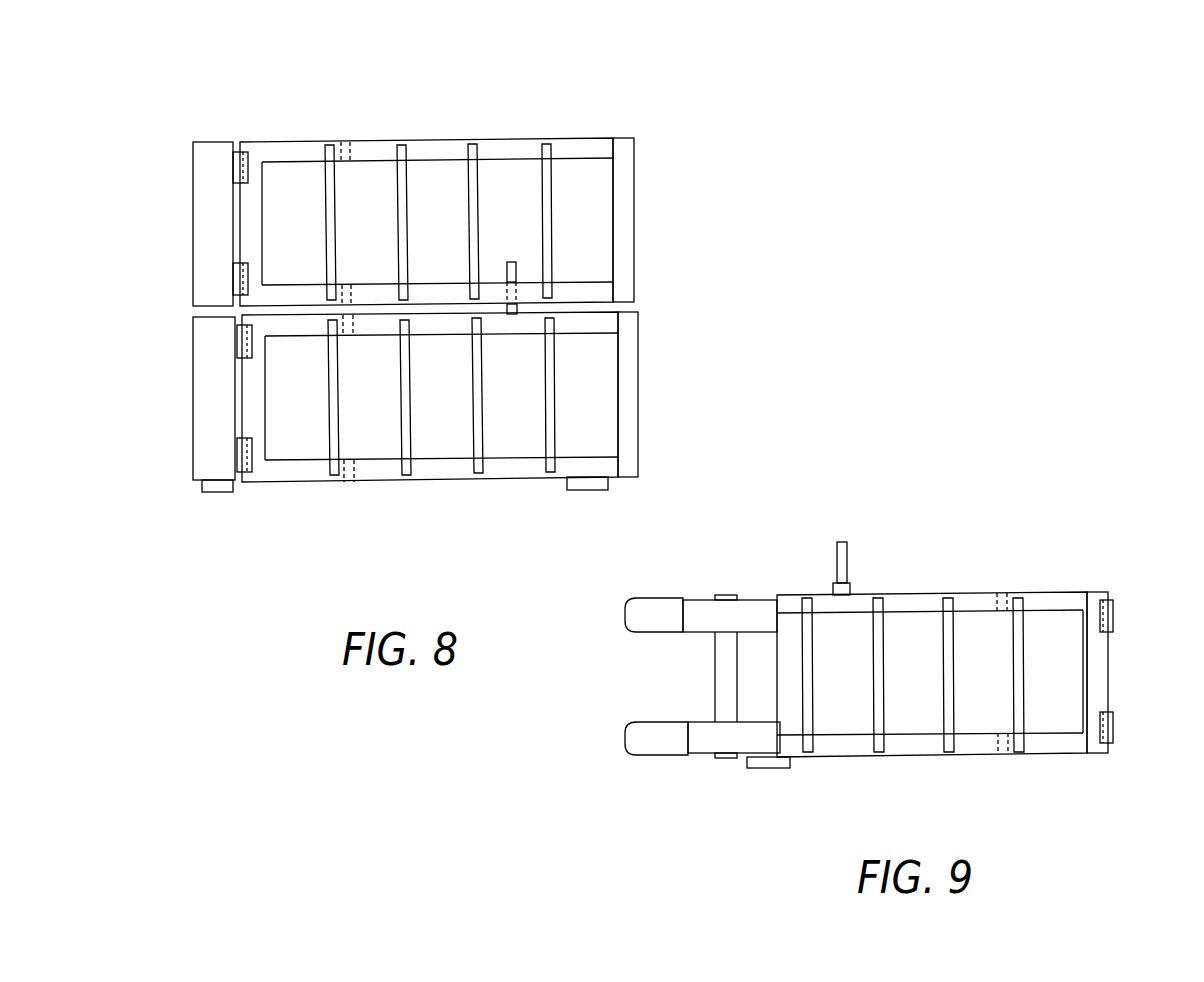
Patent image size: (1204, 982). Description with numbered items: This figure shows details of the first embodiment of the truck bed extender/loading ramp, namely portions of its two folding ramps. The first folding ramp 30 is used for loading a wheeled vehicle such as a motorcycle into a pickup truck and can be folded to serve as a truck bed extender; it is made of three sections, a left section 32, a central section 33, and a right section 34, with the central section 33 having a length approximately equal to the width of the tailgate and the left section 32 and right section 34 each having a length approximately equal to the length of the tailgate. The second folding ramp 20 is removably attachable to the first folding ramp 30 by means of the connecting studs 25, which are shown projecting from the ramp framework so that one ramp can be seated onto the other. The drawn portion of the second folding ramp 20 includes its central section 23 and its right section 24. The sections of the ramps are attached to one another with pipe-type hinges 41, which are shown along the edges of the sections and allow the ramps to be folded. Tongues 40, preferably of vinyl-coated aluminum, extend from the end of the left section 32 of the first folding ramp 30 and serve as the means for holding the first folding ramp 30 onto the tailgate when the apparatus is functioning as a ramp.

In FIG. 8, the second folding ramp 20 is at (633, 188).
In FIG. 8, the central section of second folding ramp 23 is at (192, 142).
In FIG. 8, the right section of second folding ramp 24 is at (633, 137).
In FIG. 8, the connecting studs 25 is at (513, 262).
In FIG. 9, the connecting studs 25 is at (845, 540).
In FIG. 8, the first folding ramp 30 is at (638, 385).
In FIG. 9, the left section of first folding ramp 32 is at (1047, 592).
In FIG. 8, the central section of first folding ramp 33 is at (198, 481).
In FIG. 8, the right section of first folding ramp 34 is at (638, 477).
In FIG. 9, the tongues 40 is at (625, 602).
In FIG. 8, the pipe-type hinges 41 is at (233, 168).
In FIG. 9, the pipe-type hinges 41 is at (1112, 602).